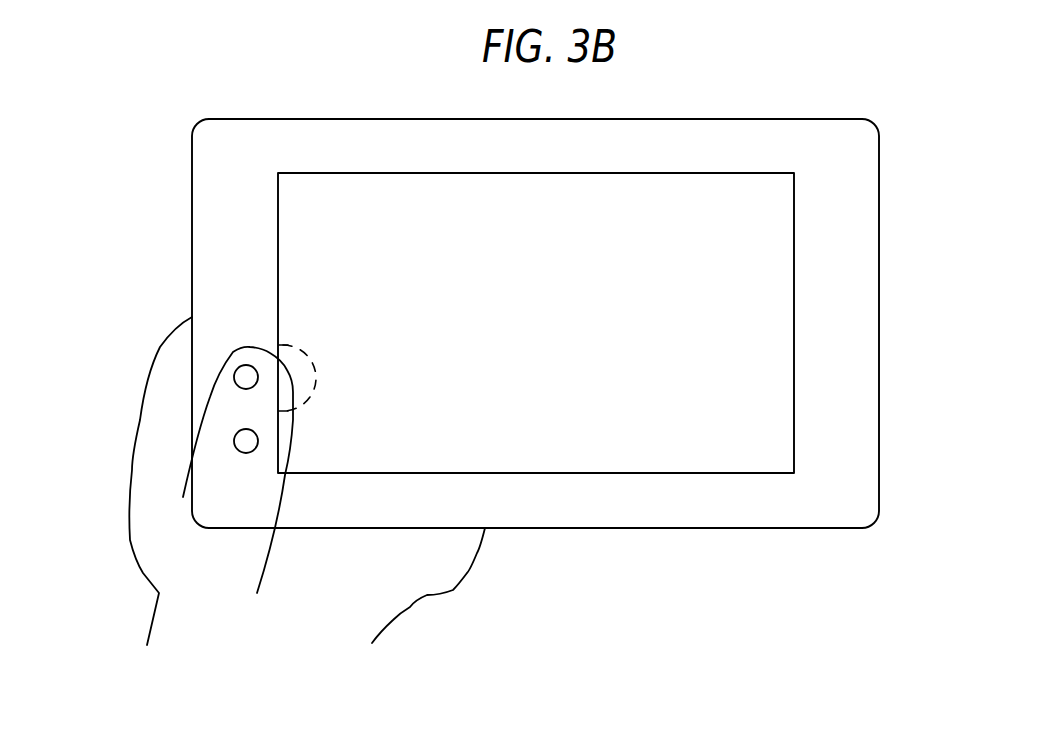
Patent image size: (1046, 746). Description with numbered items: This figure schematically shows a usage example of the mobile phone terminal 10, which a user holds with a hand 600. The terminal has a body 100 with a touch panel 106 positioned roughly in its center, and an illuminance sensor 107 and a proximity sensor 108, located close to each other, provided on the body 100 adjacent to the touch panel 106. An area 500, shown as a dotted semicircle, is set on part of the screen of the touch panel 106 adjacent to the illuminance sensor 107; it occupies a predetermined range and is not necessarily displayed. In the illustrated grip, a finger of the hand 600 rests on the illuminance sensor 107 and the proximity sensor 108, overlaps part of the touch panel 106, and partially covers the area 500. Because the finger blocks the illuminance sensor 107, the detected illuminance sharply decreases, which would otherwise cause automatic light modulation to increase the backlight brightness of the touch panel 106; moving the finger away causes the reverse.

The mobile phone terminal 10 is at (681, 595).
The body 100 is at (537, 119).
The touch panel 106 is at (680, 172).
The illuminance sensor 107 is at (247, 364).
The proximity sensor 108 is at (259, 439).
The area 500 is at (302, 352).
The hand 600 is at (467, 573).